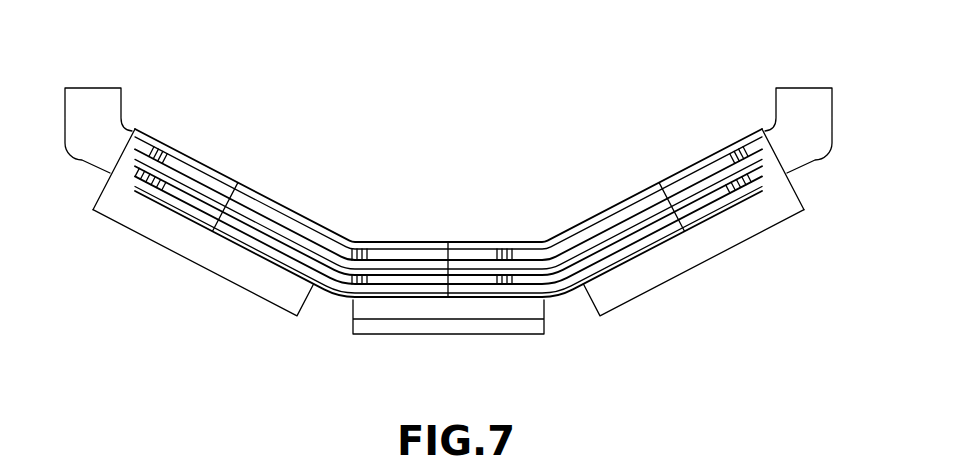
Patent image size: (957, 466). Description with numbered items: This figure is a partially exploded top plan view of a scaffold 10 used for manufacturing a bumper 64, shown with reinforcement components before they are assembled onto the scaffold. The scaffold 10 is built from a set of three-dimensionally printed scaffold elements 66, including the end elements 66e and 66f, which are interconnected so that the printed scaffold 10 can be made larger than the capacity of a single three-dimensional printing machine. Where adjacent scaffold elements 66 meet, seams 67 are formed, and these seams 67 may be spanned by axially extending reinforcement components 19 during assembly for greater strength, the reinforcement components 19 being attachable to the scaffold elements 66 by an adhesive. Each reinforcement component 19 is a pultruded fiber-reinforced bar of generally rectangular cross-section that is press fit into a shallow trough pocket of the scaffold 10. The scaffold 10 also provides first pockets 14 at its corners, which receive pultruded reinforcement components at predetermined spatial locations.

The scaffold 10 is at (471, 204).
The first pocket 14 is at (770, 133).
The reinforcement component 19 is at (247, 296).
The bumper 64 is at (485, 148).
The scaffold elements 66 is at (610, 208).
The scaffold element 66e is at (121, 110).
The scaffold element 66f is at (805, 86).
The seams 67 is at (278, 176).